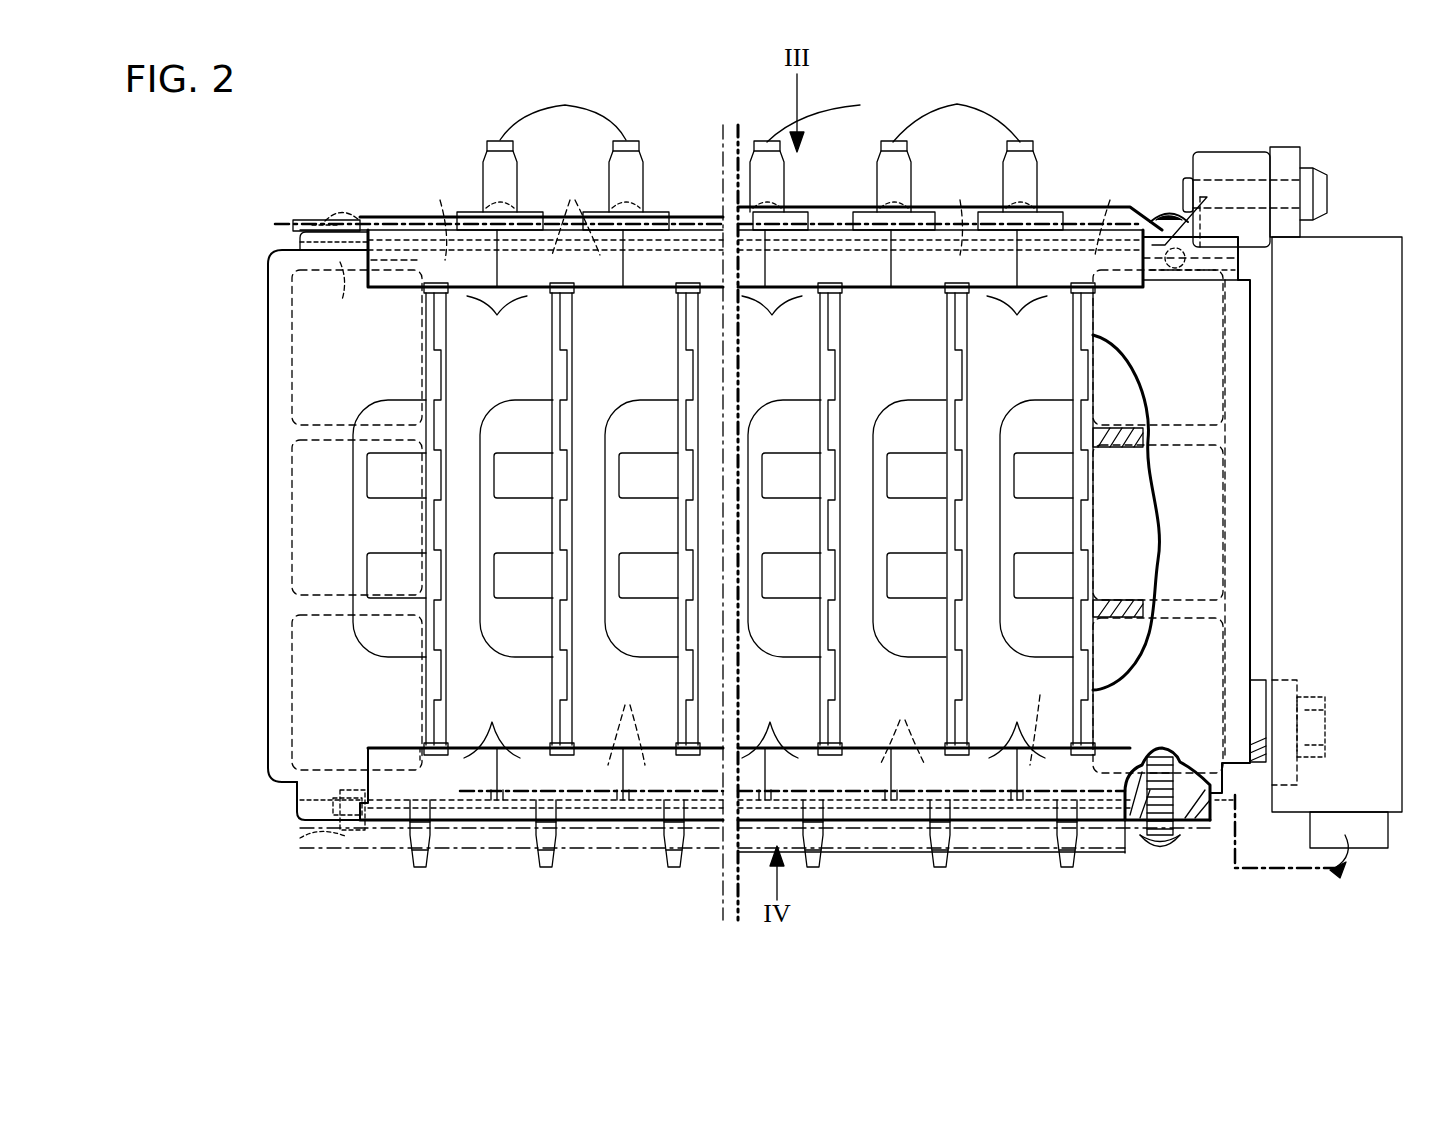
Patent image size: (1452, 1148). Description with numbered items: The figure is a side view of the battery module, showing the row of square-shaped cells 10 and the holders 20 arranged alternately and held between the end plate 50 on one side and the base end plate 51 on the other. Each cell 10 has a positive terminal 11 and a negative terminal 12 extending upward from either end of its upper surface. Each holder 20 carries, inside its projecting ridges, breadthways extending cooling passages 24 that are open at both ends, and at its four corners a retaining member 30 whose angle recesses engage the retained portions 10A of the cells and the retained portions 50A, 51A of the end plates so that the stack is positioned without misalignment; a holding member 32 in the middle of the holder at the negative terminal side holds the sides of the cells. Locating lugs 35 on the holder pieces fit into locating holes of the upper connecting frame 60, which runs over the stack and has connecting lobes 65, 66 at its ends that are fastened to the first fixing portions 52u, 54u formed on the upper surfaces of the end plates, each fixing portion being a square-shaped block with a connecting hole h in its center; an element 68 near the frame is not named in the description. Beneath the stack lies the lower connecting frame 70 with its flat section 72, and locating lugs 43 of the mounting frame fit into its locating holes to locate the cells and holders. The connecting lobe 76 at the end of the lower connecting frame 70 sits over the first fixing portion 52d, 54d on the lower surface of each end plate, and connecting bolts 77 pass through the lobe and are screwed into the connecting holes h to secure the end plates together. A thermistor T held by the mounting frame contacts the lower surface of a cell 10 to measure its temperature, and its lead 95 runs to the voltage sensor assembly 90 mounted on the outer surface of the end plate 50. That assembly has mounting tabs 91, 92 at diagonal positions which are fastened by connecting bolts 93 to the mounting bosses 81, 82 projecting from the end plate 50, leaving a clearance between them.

The cell 10 is at (460, 350).
The retained portion 10A is at (771, 464).
The positive terminal 11 is at (749, 105).
The negative terminal 12 is at (956, 123).
The holder 20 is at (548, 346).
The cooling passage 24 is at (565, 620).
The retaining member 30 is at (755, 515).
The holding member 32 is at (385, 640).
The locating lug 35 is at (626, 195).
The locating lug 43 is at (678, 852).
The end plate 50 is at (1210, 355).
The retained portion 50A is at (1115, 270).
The end plate (base end plate) 51 is at (305, 306).
The retained portion 51A is at (410, 245).
The first fixing portion 52u is at (1210, 250).
The first fixing portion 52d is at (1213, 800).
The first fixing portion 54u is at (300, 240).
The first fixing portion 54d is at (305, 800).
The upper connecting frame 60 is at (1063, 206).
The connecting lobe 65 is at (1208, 200).
The connecting lobe 66 is at (318, 208).
The projection 68 is at (354, 210).
The lower connecting frame 70 is at (1036, 852).
The flat section 72 is at (362, 840).
The connecting lobe 76 is at (1188, 838).
The connecting bolt 77 is at (335, 842).
The mounting boss 81 is at (1235, 160).
The mounting boss 82 is at (1237, 770).
The voltage sensor assembly 90 is at (1402, 420).
The mounting tab 91 is at (1285, 150).
The mounting tab 92 is at (1300, 668).
The connecting bolt 93 is at (1330, 185).
The lead 95 is at (1295, 872).
The connecting hole h is at (1163, 868).
The thermistor T is at (508, 810).